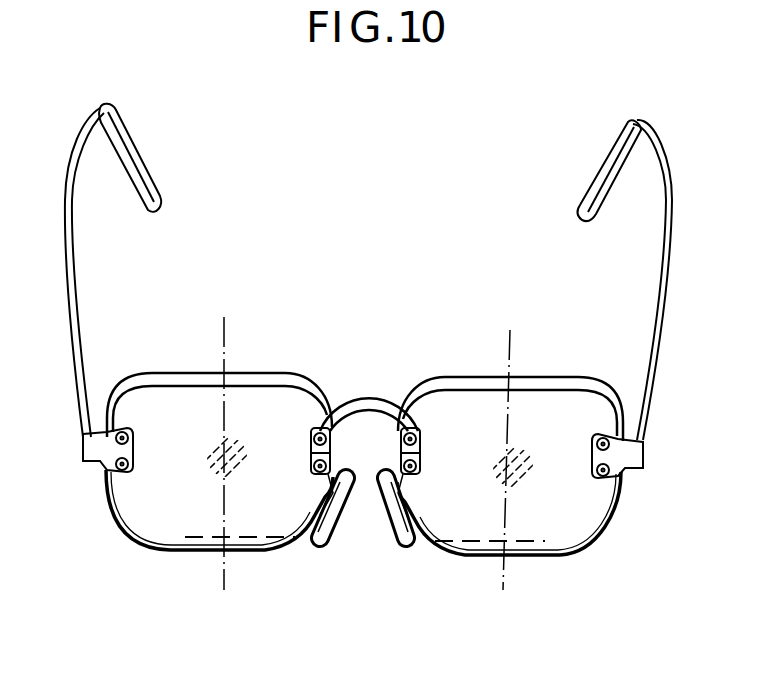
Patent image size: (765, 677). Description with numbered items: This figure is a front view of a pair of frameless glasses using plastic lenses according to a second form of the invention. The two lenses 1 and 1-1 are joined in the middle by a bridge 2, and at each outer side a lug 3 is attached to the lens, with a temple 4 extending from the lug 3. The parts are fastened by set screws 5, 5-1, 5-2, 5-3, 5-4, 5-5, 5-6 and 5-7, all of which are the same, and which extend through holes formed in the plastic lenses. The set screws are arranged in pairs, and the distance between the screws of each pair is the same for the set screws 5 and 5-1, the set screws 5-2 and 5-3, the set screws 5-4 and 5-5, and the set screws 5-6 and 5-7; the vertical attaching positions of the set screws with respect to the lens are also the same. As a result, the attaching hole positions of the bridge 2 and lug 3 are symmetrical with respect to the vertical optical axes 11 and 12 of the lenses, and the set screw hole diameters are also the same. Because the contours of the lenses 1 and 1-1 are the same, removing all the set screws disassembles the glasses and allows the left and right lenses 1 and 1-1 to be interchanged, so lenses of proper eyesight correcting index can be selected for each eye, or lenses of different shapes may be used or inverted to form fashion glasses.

The lens 1 is at (529, 523).
The lens 1-1 is at (177, 513).
The vertical optical axis 11 is at (224, 355).
The vertical optical axis 12 is at (510, 350).
The bridge 2 is at (372, 398).
The lug 3 is at (625, 466).
The temple 4 is at (665, 318).
The set screw 5 is at (598, 478).
The set screw 5-1 is at (594, 433).
The set screw 5-2 is at (427, 473).
The set screw 5-3 is at (420, 427).
The set screw 5-4 is at (317, 476).
The set screw 5-5 is at (317, 427).
The set screw 5-6 is at (121, 470).
The set screw 5-7 is at (127, 430).